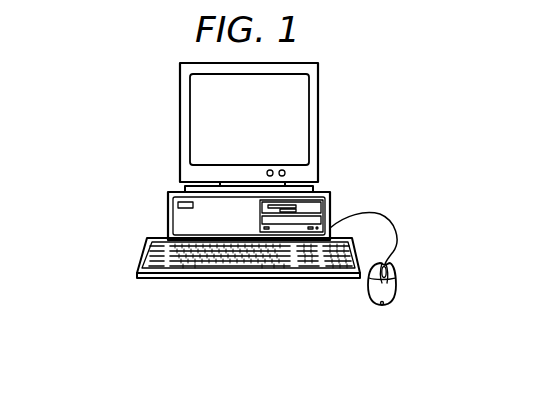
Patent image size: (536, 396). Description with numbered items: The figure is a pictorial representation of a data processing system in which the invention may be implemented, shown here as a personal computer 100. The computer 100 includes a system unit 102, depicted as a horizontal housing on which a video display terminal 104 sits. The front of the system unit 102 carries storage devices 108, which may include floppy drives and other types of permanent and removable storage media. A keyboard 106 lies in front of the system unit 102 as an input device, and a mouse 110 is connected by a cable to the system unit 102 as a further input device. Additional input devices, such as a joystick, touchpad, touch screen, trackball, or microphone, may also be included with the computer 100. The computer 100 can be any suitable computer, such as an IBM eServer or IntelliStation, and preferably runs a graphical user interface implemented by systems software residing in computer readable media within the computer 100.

The computer 100 is at (122, 114).
The system unit 102 is at (168, 213).
The video display terminal 104 is at (318, 121).
The keyboard 106 is at (163, 280).
The storage devices 108 is at (300, 207).
The mouse 110 is at (383, 305).